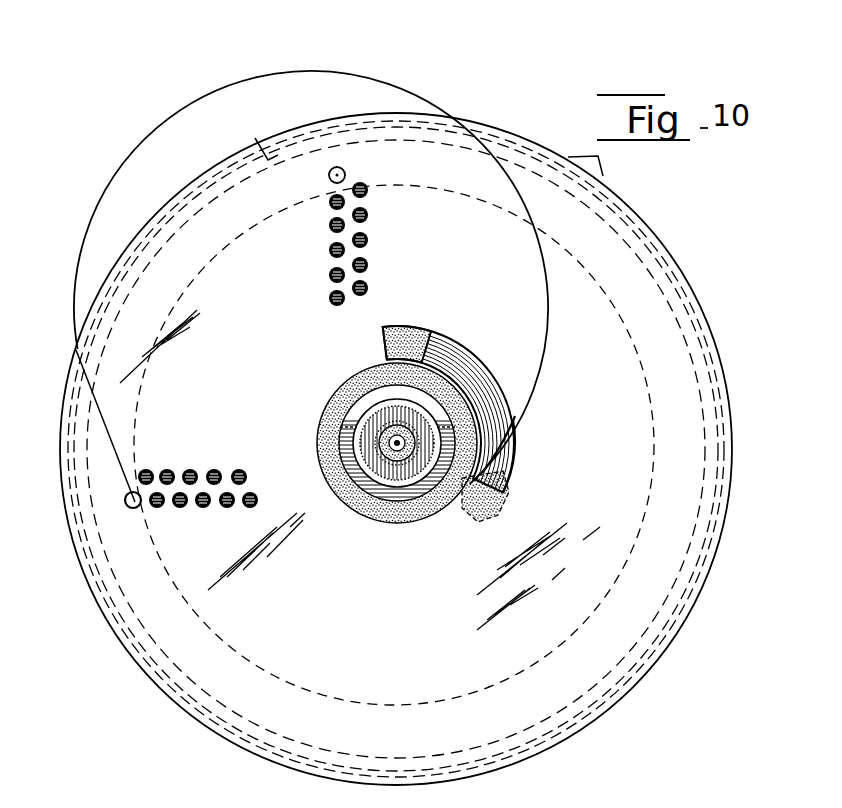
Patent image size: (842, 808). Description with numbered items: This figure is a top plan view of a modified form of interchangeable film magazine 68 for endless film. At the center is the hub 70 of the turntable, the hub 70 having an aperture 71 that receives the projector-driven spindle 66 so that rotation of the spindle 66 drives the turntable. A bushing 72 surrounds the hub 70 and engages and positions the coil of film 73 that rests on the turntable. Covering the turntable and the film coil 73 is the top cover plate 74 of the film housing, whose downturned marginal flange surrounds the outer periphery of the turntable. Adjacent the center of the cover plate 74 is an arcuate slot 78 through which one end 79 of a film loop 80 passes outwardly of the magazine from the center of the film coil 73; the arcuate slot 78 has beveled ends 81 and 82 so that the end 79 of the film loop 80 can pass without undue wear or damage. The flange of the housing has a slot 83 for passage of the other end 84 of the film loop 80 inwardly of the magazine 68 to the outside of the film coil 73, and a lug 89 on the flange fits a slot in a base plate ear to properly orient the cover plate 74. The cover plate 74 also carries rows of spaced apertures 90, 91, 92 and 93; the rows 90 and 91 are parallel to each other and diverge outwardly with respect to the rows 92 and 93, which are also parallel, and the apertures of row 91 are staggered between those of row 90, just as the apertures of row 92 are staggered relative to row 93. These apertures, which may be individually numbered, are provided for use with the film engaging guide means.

The spindle 66 is at (392, 458).
The film magazine 68 is at (592, 719).
The hub 70 is at (386, 501).
The aperture 71 is at (412, 503).
The bushing 72 is at (430, 504).
The coil of film 73 is at (518, 471).
The top cover plate 74 is at (426, 642).
The arcuate slot 78 is at (480, 363).
The end of film loop 79 is at (528, 402).
The film loop 80 is at (190, 108).
The beveled end 81 is at (495, 510).
The beveled end 82 is at (432, 333).
The slot 83 is at (256, 149).
The other end of film loop 84 is at (77, 318).
The lug 89 is at (579, 156).
The row of spaced apertures 90 is at (259, 497).
The row of spaced apertures 91 is at (248, 477).
The row of spaced apertures 92 is at (363, 297).
The row of spaced apertures 93 is at (338, 307).